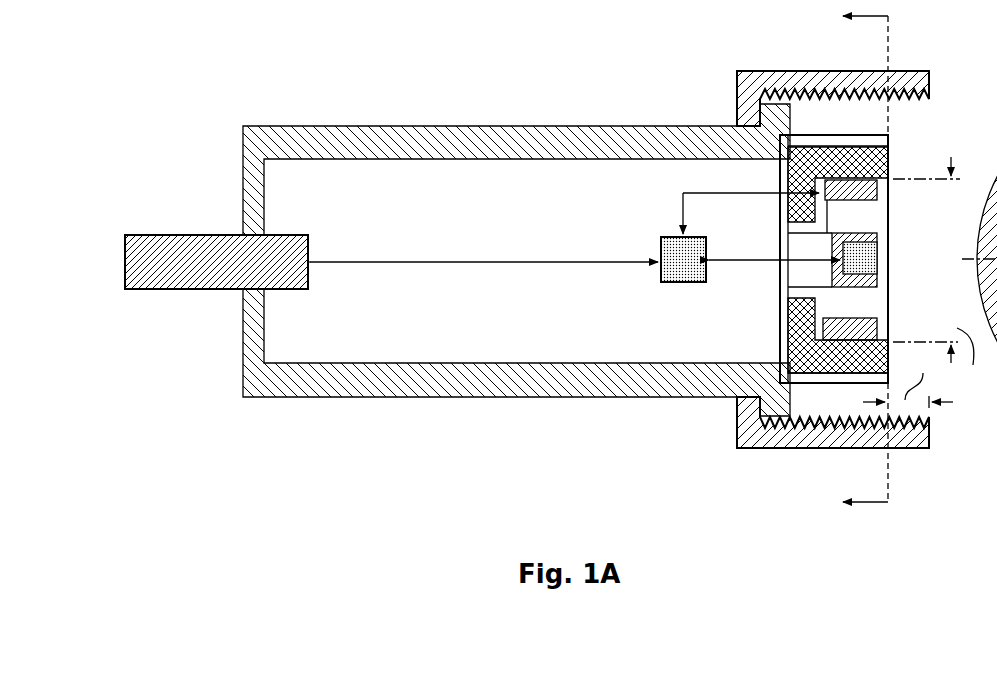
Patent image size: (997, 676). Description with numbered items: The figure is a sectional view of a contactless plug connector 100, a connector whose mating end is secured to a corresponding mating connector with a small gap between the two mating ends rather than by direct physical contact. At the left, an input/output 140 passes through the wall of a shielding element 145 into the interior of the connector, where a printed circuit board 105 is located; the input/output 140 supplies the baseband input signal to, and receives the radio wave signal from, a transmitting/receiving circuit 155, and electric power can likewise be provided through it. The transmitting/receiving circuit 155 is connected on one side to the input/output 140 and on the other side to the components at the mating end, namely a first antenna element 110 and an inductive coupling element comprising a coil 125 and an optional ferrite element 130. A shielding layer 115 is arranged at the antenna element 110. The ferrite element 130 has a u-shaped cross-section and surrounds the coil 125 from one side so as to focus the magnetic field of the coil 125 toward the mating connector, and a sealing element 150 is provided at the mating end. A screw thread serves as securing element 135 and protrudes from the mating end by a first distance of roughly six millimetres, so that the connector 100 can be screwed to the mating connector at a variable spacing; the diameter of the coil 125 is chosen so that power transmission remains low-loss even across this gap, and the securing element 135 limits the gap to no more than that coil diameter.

The contactless plug connector 100 is at (561, 260).
The printed circuit board 105 is at (463, 333).
The first antenna element 110 is at (863, 258).
The shielding layer 115 is at (855, 235).
The coil 125 is at (867, 188).
The ferrite element 130 is at (882, 160).
The securing element 135 is at (773, 71).
The input/output 140 is at (162, 280).
The shielding element 145 is at (393, 142).
The sealing element 150 is at (888, 140).
The transmitting/receiving circuit 155 is at (683, 282).